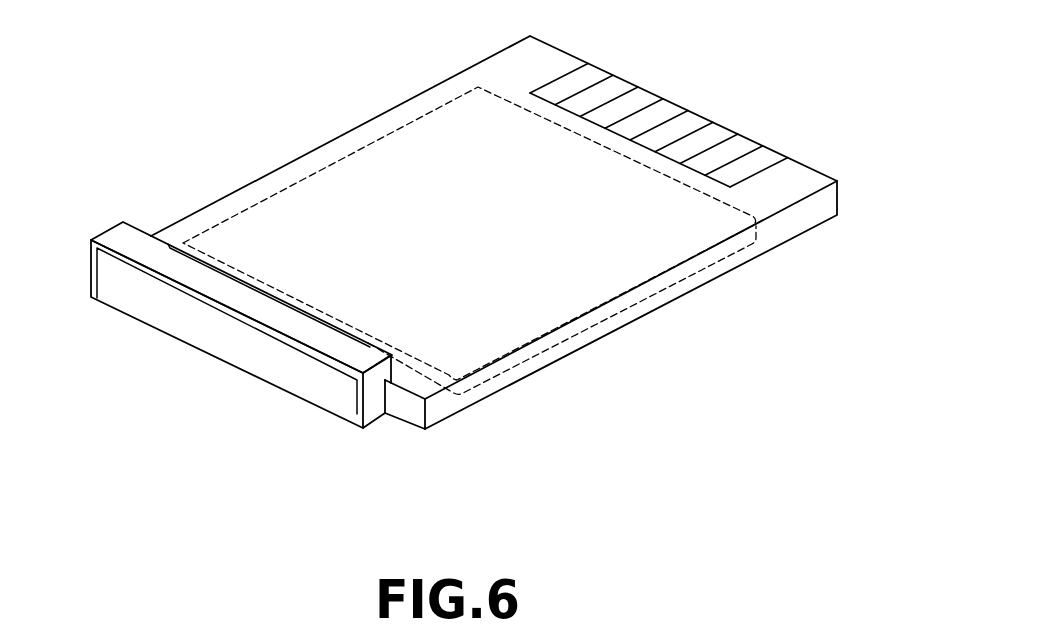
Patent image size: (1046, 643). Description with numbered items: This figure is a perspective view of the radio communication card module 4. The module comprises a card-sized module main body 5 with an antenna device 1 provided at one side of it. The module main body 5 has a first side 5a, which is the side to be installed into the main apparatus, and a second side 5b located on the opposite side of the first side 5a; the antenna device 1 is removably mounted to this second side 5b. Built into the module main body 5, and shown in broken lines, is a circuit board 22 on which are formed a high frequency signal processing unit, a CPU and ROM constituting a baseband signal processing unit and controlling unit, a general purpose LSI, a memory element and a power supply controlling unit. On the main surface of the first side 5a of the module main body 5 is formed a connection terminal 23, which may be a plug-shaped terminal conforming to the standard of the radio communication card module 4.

The radio communication card module 4 is at (216, 65).
The module main body 5 is at (373, 128).
The first side 5a is at (810, 168).
The second side 5b is at (405, 407).
The antenna device 1 is at (300, 383).
The circuit board 22 is at (654, 293).
The connection terminal 23 is at (658, 117).